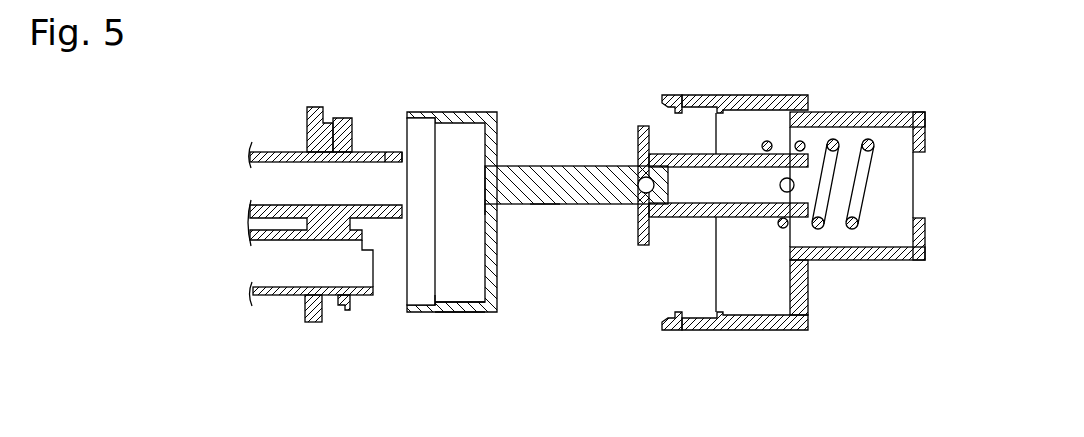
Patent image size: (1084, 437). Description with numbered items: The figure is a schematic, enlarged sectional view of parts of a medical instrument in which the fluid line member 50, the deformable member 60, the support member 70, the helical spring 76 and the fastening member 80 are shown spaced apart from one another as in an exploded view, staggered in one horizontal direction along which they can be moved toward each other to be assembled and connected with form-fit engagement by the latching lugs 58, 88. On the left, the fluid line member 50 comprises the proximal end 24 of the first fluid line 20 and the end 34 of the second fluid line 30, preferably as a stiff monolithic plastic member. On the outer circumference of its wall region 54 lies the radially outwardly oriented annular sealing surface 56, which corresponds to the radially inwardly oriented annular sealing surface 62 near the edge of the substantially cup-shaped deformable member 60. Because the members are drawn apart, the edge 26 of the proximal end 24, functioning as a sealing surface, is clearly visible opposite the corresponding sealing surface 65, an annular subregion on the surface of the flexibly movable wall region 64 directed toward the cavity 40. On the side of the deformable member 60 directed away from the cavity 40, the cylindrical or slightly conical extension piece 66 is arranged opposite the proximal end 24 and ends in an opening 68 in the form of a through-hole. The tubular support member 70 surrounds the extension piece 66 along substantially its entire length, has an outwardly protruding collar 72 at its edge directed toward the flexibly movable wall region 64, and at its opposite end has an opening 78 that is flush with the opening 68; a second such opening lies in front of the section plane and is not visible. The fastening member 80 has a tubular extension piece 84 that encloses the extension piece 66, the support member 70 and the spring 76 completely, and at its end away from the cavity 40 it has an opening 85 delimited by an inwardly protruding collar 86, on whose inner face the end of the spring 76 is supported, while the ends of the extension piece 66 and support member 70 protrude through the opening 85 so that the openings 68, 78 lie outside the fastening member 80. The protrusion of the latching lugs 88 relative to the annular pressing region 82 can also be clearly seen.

The first fluid line 20 is at (268, 165).
The proximal end of the first fluid line 24 is at (397, 163).
The edge 26 is at (410, 218).
The second fluid line 30 is at (267, 290).
The end of the second fluid line 34 is at (368, 285).
The cavity 40 is at (458, 165).
The fluid line member 50 is at (292, 297).
The wall region 54 is at (335, 122).
The annular sealing surface 56 is at (342, 310).
The latching lug 58 is at (308, 107).
The deformable member 60 is at (450, 312).
The annular sealing surface 62 is at (438, 300).
The flexibly movable wall region 64 is at (494, 147).
The sealing surface 65 is at (483, 213).
The extension piece 66 is at (543, 203).
The opening 68 is at (643, 178).
The support member 70 is at (737, 213).
The outwardly protruding collar 72 is at (647, 228).
The helical spring 76 is at (852, 229).
The opening 78 is at (787, 192).
The fastening member 80 is at (771, 95).
The annular pressing region 82 is at (725, 100).
The tubular extension piece 84 is at (843, 113).
The opening 85 is at (915, 145).
The inwardly protruding collar 86 is at (917, 162).
The latching lug 88 is at (680, 104).